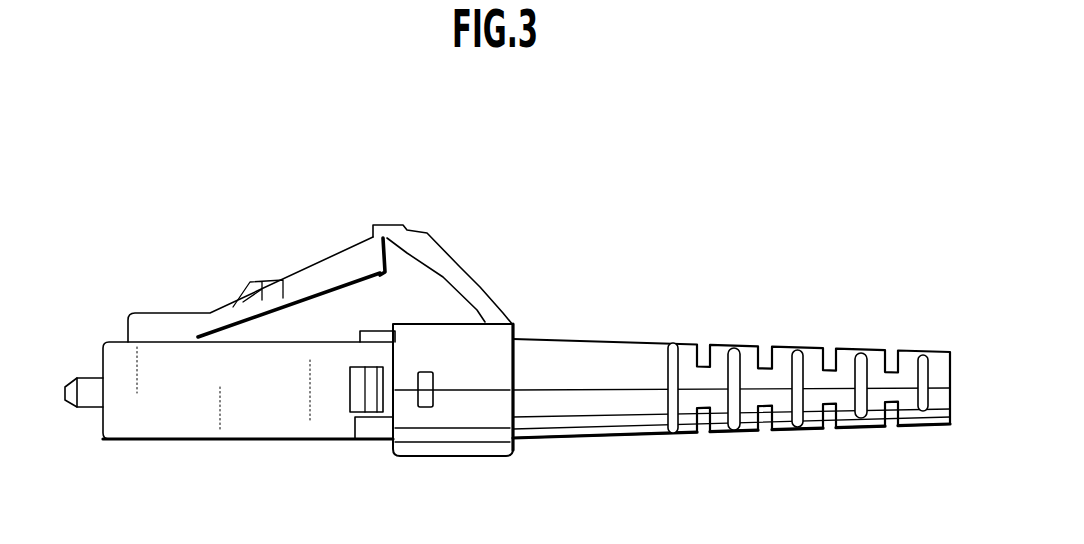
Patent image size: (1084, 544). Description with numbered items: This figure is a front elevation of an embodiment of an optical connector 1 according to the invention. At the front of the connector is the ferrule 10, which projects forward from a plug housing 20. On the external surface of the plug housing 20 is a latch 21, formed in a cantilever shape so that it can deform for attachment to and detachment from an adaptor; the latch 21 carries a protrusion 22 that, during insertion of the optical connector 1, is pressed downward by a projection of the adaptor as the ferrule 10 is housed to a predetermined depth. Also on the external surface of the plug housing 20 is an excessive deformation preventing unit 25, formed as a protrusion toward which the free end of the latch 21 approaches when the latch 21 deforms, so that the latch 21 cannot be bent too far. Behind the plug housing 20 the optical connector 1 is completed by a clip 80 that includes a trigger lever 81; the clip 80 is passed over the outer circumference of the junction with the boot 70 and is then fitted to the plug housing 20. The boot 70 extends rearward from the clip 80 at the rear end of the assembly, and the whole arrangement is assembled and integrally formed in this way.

The optical connector 1 is at (544, 214).
The ferrule 10 is at (84, 375).
The plug housing 20 is at (260, 433).
The latch 21 is at (330, 262).
The protrusion 22 is at (272, 290).
The excessive deformation preventing unit 25 is at (382, 328).
The boot 70 is at (717, 427).
The clip 80 is at (458, 453).
The trigger lever 81 is at (430, 243).